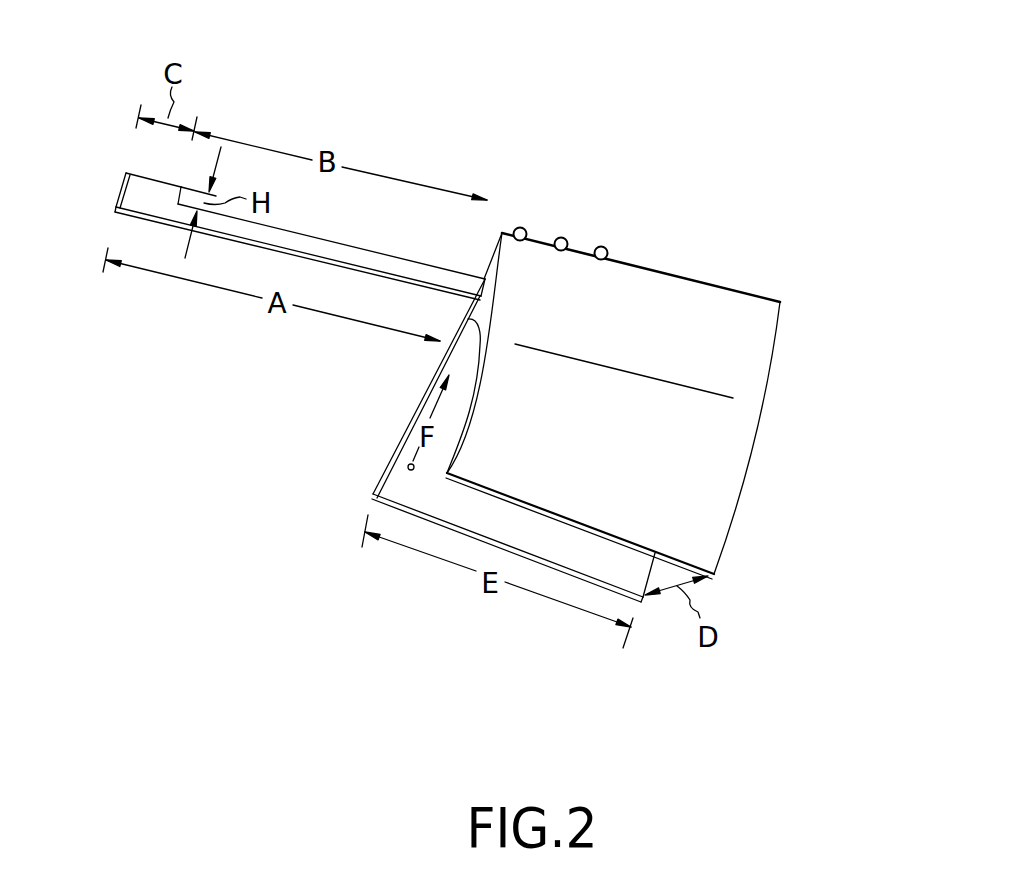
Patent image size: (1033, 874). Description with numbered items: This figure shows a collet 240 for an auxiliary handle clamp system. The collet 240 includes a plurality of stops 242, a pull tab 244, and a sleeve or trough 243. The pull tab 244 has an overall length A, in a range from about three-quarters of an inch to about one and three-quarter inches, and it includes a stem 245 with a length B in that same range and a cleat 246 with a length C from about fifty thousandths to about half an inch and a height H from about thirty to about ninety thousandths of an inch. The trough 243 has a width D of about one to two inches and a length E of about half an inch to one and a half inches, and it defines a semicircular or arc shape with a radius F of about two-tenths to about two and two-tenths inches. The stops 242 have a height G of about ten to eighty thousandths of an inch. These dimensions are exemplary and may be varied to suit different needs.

The collet 240 is at (845, 304).
The stops 242 is at (601, 247).
The trough 243 is at (745, 485).
The pull tab 244 is at (382, 122).
The stem 245 is at (363, 266).
The cleat 246 is at (125, 172).